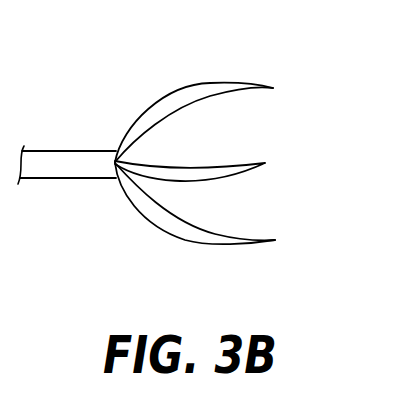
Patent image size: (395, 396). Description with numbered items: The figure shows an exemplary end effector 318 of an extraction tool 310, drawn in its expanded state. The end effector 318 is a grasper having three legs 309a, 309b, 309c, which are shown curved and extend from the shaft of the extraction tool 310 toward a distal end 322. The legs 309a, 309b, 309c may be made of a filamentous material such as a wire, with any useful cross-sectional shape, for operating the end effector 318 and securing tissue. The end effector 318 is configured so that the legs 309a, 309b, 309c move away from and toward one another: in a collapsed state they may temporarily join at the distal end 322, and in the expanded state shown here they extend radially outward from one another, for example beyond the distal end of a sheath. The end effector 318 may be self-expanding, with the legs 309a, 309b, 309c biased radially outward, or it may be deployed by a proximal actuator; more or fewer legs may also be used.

The extraction tool 310 is at (77, 182).
The distal end 322 is at (274, 85).
The leg 309c is at (207, 80).
The leg 309b is at (191, 166).
The leg 309a is at (193, 225).
The end effector 318 is at (162, 233).